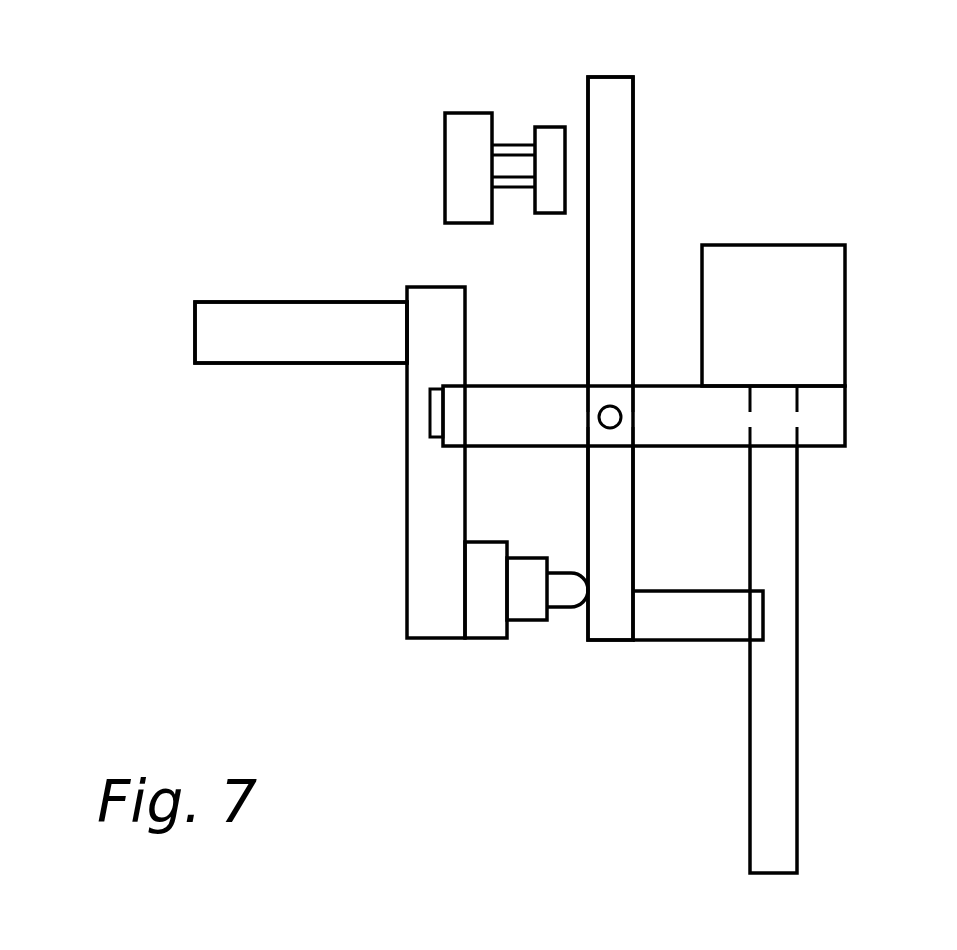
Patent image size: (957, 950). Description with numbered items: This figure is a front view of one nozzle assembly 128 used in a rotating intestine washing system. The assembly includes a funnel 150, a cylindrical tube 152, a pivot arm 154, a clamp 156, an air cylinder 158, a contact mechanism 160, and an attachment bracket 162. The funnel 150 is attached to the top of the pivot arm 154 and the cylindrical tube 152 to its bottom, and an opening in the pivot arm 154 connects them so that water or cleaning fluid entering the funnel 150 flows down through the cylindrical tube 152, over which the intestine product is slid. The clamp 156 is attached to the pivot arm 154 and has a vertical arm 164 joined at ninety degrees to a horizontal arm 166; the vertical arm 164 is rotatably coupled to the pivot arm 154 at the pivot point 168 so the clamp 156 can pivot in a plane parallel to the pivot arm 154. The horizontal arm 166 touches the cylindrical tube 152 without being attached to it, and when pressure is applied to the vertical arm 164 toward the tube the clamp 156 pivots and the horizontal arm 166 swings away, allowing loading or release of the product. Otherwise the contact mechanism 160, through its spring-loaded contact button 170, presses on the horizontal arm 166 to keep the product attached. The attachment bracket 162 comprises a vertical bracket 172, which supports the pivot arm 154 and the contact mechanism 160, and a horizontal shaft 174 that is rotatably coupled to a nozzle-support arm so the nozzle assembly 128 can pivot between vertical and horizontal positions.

The nozzle assembly 128 is at (98, 161).
The funnel 150 is at (783, 244).
The cylindrical tube 152 is at (798, 583).
The pivot arm 154 is at (847, 420).
The clamp 156 is at (647, 217).
The air cylinder 158 is at (478, 113).
The contact mechanism 160 is at (517, 637).
The attachment bracket 162 is at (377, 403).
The vertical arm 164 is at (633, 105).
The horizontal arm 166 is at (676, 643).
The pivot point 168 is at (621, 422).
The contact button 170 is at (562, 608).
The vertical bracket 172 is at (407, 545).
The horizontal shaft 174 is at (283, 301).